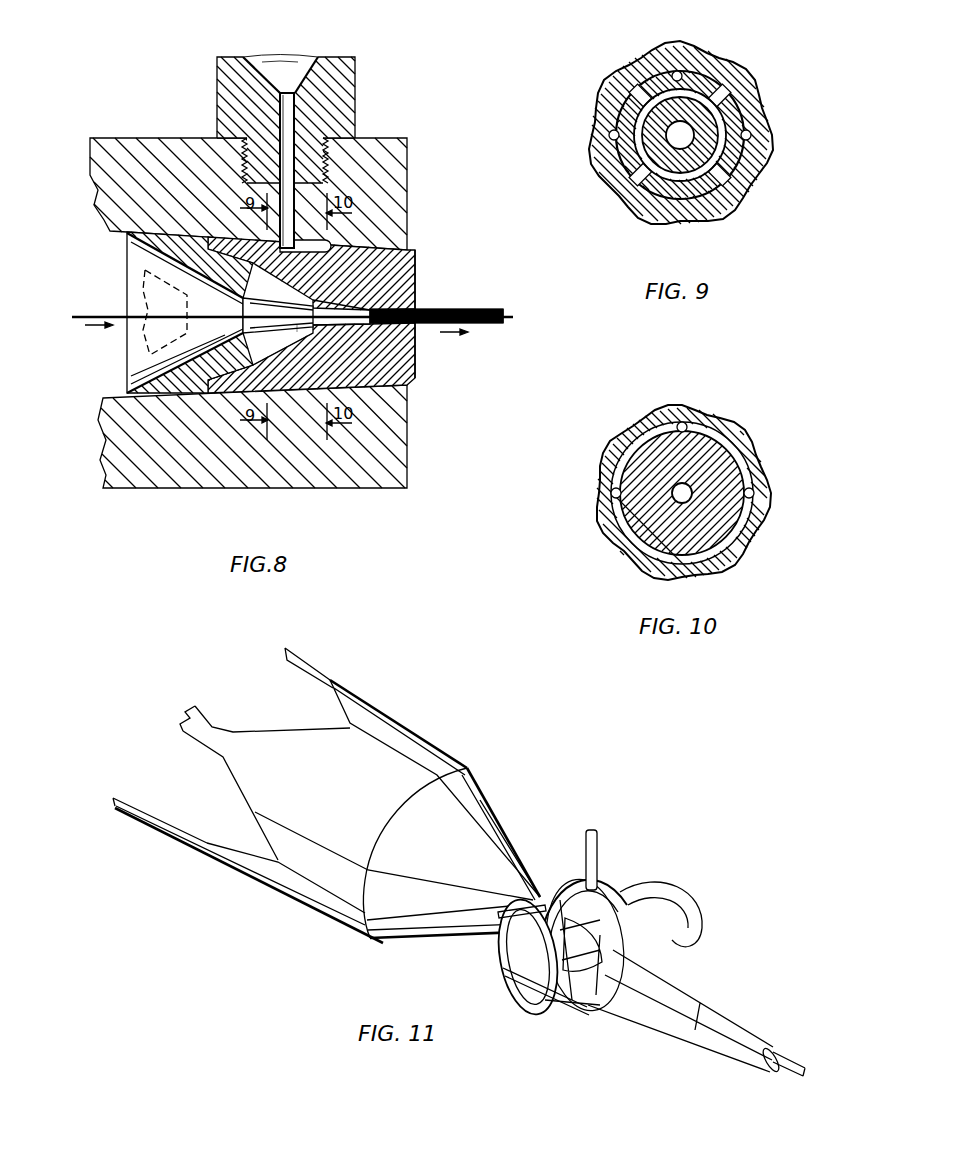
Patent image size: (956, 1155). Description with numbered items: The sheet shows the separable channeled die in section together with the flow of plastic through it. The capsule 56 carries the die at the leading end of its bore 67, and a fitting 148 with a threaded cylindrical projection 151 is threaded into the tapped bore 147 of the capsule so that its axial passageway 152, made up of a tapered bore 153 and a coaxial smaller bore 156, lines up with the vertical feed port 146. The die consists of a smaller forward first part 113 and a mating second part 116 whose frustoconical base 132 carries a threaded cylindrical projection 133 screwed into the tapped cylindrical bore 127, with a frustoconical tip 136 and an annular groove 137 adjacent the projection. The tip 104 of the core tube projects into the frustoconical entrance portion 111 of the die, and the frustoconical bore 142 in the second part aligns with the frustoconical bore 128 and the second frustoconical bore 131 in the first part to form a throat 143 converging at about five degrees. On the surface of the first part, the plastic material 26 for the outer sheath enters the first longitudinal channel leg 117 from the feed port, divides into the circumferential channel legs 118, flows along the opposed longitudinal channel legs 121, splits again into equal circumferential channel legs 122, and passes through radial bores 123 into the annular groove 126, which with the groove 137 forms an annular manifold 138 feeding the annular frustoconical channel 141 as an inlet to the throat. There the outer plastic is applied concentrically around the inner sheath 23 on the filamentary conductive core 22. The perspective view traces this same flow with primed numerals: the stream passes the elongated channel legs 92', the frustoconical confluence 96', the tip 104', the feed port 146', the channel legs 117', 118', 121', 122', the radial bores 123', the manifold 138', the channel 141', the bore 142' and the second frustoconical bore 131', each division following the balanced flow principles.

In FIG. 8, the filamentary conductive core 22 is at (80, 317).
In FIG. 8, the inner sheath 23 is at (498, 325).
In FIG. 8, the outer sheath 26 is at (492, 308).
In FIG. 11, the outer sheath 26 is at (758, 1035).
In FIG. 9, the capsule 56 is at (718, 215).
In FIG. 10, the capsule 56 is at (712, 412).
In FIG. 8, the bore 67 is at (350, 262).
In FIG. 11, the elongated channel legs (flow stream) 92' is at (248, 793).
In FIG. 11, the frustoconical confluence (flow stream) 96' is at (373, 809).
In FIG. 8, the frustoconical tip 104 is at (127, 313).
In FIG. 11, the frustoconical tip (flow stream) 104' is at (452, 853).
In FIG. 8, the frustoconical entrance portion 111 is at (160, 255).
In FIG. 8, the first die part 113 is at (418, 375).
In FIG. 9, the first die part 113 is at (655, 212).
In FIG. 10, the first die part 113 is at (742, 535).
In FIG. 8, the second die part 116 is at (140, 370).
In FIG. 9, the second die part 116 is at (668, 72).
In FIG. 8, the first longitudinal channel leg 117 is at (335, 301).
In FIG. 10, the first longitudinal channel leg 117 is at (670, 401).
In FIG. 11, the first longitudinal channel leg (flow stream) 117' is at (623, 932).
In FIG. 10, the circumferential channel legs 118 is at (693, 486).
In FIG. 11, the circumferential channel legs (flow stream) 118' is at (682, 914).
In FIG. 9, the second and third longitudinal channel legs 121 is at (721, 135).
In FIG. 10, the second and third longitudinal channel legs 121 is at (712, 493).
In FIG. 11, the longitudinal channel legs (flow stream) 121' is at (620, 984).
In FIG. 9, the circumferential channel legs 122 is at (725, 135).
In FIG. 11, the circumferential channel legs (flow stream) 122' is at (511, 957).
In FIG. 9, the radial bores 123 is at (709, 105).
In FIG. 11, the radial bores (flow stream) 123' is at (531, 891).
In FIG. 8, the annular groove 126 is at (380, 268).
In FIG. 9, the annular groove 126 is at (688, 90).
In FIG. 8, the tapped cylindrical bore 127 is at (150, 225).
In FIG. 8, the frustoconical bore 128 is at (385, 282).
In FIG. 8, the second frustoconical bore 131 is at (379, 308).
In FIG. 10, the second frustoconical bore 131 is at (630, 519).
In FIG. 11, the second frustoconical bore (flow stream) 131' is at (685, 1012).
In FIG. 8, the frustoconical base 132 is at (150, 240).
In FIG. 8, the threaded cylindrical projection 133 is at (240, 355).
In FIG. 8, the frustoconical tip 136 is at (293, 345).
In FIG. 8, the annular groove 137 is at (297, 330).
In FIG. 8, the annular manifold 138 is at (259, 300).
In FIG. 11, the annular manifold (flow stream) 138' is at (585, 929).
In FIG. 8, the annular frustoconical channel 141 is at (278, 315).
In FIG. 11, the annular frustoconical channel (flow stream) 141' is at (583, 1022).
In FIG. 8, the frustoconical bore 142 is at (260, 330).
In FIG. 9, the frustoconical bore 142 is at (638, 129).
In FIG. 11, the frustoconical bore (flow stream) 142' is at (524, 991).
In FIG. 8, the throat 143 is at (395, 395).
In FIG. 8, the vertical feed port 146 is at (369, 170).
In FIG. 11, the vertical feed port (flow stream) 146' is at (616, 857).
In FIG. 8, the tapped bore 147 is at (325, 140).
In FIG. 8, the fitting 148 is at (350, 100).
In FIG. 8, the threaded cylindrical projection 151 is at (250, 158).
In FIG. 8, the axial passageway 152 is at (287, 58).
In FIG. 8, the tapered bore 153 is at (245, 78).
In FIG. 8, the smaller bore 156 is at (303, 97).